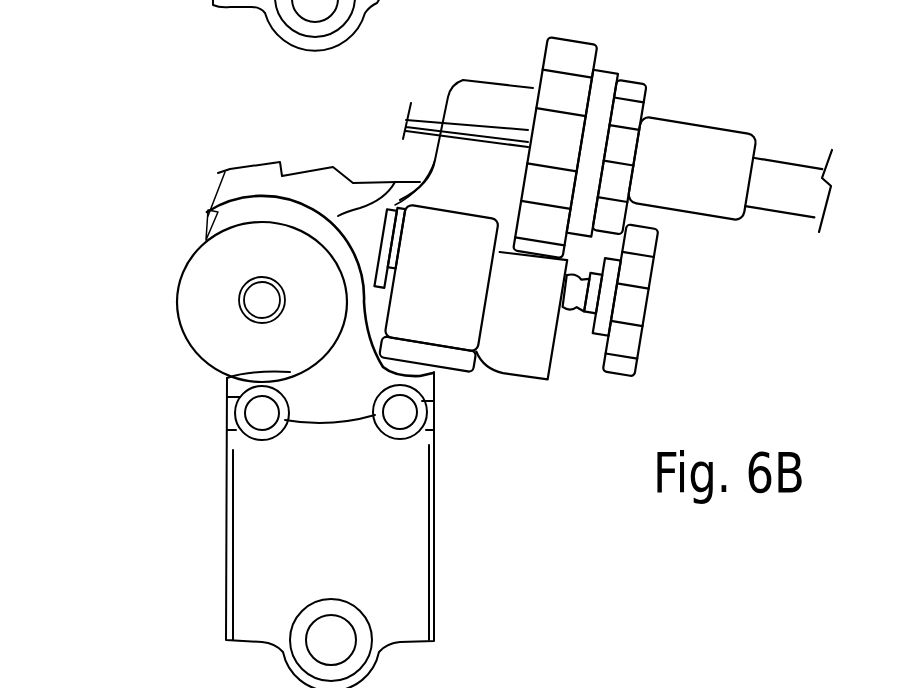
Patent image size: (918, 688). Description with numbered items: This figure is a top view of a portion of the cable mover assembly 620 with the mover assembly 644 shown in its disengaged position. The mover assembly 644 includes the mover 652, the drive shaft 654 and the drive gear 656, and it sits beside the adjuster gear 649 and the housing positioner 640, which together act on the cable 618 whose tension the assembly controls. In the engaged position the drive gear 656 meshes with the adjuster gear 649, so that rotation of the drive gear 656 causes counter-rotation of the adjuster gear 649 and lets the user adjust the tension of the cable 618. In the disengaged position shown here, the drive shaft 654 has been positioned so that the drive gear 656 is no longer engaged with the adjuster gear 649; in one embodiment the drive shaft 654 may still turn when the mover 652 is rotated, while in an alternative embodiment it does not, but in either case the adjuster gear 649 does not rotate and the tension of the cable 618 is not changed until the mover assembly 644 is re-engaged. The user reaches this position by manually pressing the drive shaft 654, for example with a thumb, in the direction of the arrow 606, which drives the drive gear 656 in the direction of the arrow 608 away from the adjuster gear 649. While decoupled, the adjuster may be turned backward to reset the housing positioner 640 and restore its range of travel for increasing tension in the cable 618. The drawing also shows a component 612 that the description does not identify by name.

The arrow 606 is at (185, 221).
The arrow 608 is at (573, 375).
The drive gear 612 is at (616, 50).
The cable 618 is at (425, 114).
The cable mover assembly 620 is at (152, 291).
The housing positioner 640 is at (673, 137).
The mover assembly 644 is at (673, 272).
The adjuster gear 649 is at (632, 90).
The mover 652 is at (453, 357).
The drive shaft 654 is at (208, 213).
The drive gear 656 is at (630, 340).